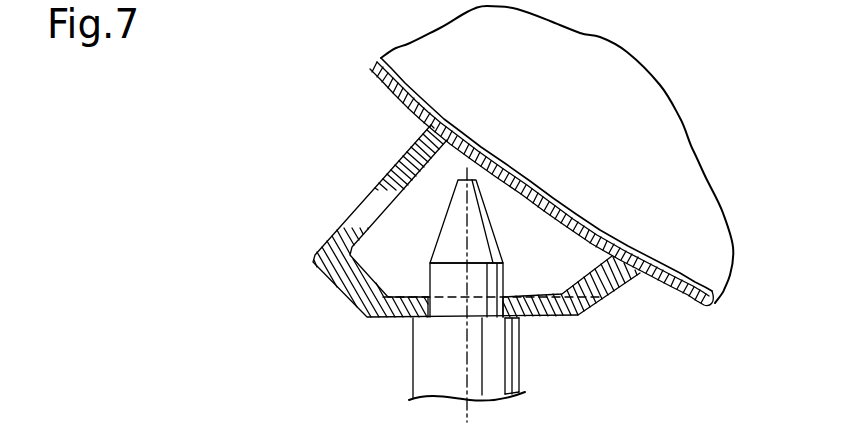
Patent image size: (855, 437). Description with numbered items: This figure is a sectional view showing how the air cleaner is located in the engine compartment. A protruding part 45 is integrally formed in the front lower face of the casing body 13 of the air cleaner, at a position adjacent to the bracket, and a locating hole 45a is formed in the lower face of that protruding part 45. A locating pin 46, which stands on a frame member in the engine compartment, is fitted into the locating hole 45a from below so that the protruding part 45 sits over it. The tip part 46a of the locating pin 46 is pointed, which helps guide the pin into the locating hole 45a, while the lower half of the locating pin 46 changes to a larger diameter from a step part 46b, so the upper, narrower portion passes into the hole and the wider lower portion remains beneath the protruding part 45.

The casing body 13 is at (399, 87).
The protruding part 45 is at (590, 312).
The locating hole 45a is at (428, 307).
The locating pin 46 is at (411, 360).
The tip part 46a is at (488, 213).
The step part 46b is at (530, 317).